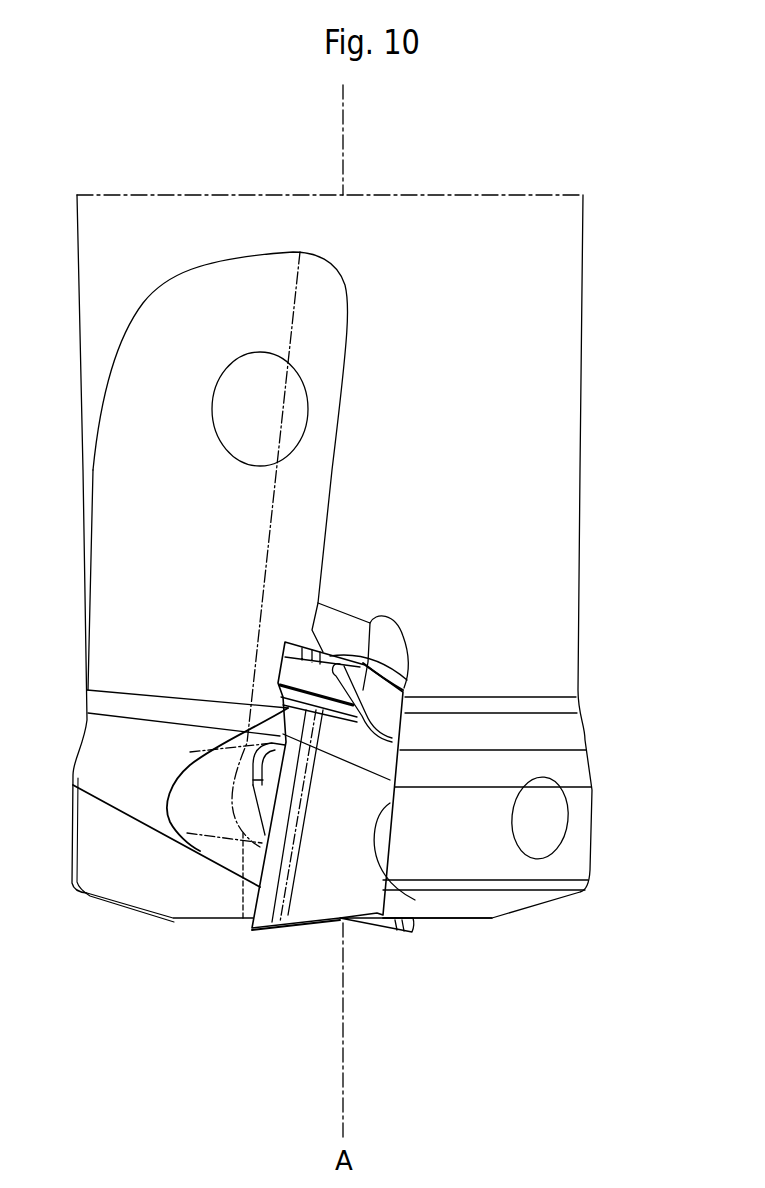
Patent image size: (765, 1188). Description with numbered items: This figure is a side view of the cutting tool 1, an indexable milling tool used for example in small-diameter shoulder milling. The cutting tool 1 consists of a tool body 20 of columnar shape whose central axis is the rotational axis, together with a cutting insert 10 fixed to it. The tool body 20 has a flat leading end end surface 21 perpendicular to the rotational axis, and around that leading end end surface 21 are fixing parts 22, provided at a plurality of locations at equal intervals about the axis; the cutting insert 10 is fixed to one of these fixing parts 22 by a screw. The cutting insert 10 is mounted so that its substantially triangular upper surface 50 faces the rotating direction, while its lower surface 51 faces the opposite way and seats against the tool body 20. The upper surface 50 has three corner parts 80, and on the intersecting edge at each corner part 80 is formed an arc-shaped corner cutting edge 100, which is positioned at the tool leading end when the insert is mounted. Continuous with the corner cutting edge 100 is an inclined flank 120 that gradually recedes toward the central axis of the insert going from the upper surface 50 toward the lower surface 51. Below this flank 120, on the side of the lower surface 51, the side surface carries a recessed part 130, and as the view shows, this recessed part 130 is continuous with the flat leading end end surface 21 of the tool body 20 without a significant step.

The cutting tool 1 is at (588, 293).
The tool body 20 is at (580, 525).
The cutting insert 10 is at (397, 769).
The upper surface 50 is at (262, 855).
The lower surface 51 is at (397, 807).
The corner part 80 is at (262, 900).
The corner cutting edge 100 is at (262, 930).
The flank 120 is at (280, 935).
The recessed part 130 is at (347, 923).
The leading end end surface 21 is at (430, 922).
The fixing part 22 is at (415, 900).